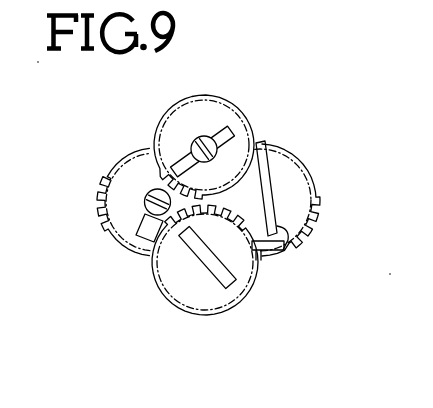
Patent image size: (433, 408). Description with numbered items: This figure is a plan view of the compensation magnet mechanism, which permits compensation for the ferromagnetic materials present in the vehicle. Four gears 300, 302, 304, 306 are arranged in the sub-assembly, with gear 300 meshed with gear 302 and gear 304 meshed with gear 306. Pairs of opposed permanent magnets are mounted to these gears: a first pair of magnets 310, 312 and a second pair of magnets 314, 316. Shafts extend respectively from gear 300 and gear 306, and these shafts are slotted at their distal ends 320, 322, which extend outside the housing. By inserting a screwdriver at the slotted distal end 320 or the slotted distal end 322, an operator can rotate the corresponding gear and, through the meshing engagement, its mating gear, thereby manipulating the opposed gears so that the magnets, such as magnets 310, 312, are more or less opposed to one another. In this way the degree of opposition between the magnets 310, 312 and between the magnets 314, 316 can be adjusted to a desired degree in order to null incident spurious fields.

The gear 300 is at (230, 101).
The gear 302 is at (255, 270).
The gear 304 is at (285, 178).
The gear 306 is at (121, 156).
The permanent magnet 310 is at (248, 135).
The permanent magnet 312 is at (217, 286).
The permanent magnet 314 is at (148, 236).
The permanent magnet 316 is at (284, 238).
The slotted distal end 320 is at (199, 137).
The slotted distal end 322 is at (144, 200).